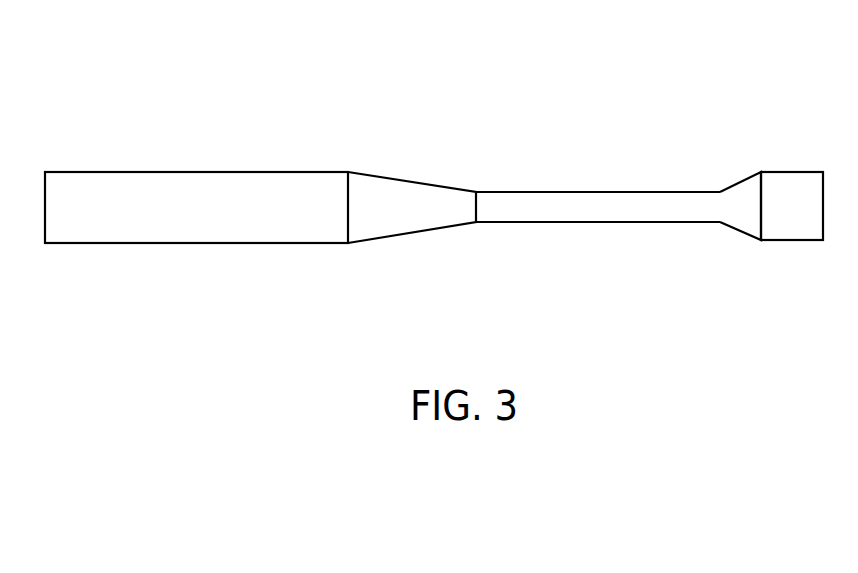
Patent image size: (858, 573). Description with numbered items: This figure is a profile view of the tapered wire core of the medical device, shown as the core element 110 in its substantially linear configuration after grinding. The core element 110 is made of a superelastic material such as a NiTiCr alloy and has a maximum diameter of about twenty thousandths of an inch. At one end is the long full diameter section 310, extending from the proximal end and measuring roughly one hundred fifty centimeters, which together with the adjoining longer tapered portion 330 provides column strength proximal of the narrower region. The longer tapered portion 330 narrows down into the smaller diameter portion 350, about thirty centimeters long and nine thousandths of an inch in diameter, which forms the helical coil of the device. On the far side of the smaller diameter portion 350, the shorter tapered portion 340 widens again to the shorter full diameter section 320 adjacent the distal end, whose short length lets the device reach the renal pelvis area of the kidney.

The core element 110 is at (291, 92).
The long full diameter section 310 is at (192, 244).
The shorter full diameter section 320 is at (797, 241).
The longer tapered portion 330 is at (416, 228).
The shorter tapered portion 340 is at (740, 177).
The smaller diameter portion 350 is at (605, 223).